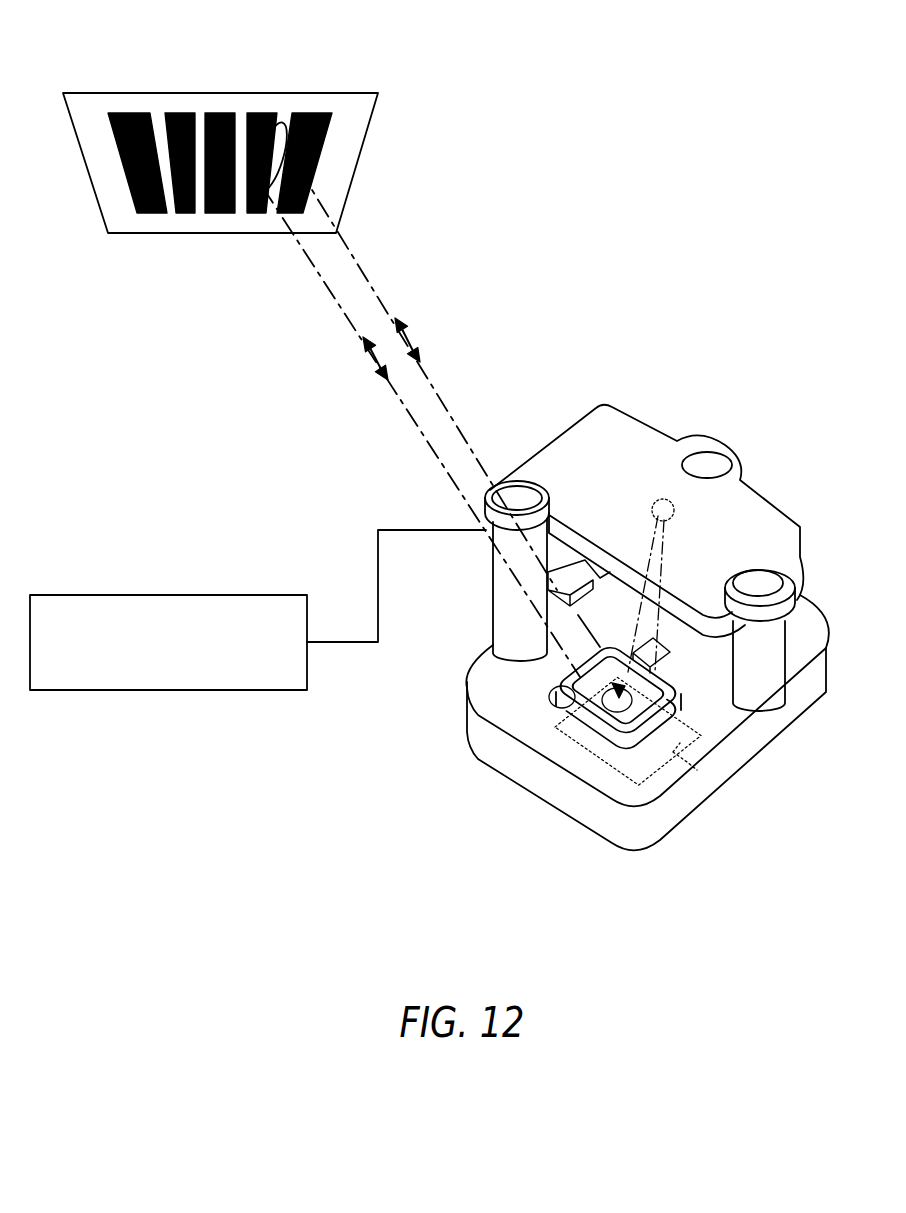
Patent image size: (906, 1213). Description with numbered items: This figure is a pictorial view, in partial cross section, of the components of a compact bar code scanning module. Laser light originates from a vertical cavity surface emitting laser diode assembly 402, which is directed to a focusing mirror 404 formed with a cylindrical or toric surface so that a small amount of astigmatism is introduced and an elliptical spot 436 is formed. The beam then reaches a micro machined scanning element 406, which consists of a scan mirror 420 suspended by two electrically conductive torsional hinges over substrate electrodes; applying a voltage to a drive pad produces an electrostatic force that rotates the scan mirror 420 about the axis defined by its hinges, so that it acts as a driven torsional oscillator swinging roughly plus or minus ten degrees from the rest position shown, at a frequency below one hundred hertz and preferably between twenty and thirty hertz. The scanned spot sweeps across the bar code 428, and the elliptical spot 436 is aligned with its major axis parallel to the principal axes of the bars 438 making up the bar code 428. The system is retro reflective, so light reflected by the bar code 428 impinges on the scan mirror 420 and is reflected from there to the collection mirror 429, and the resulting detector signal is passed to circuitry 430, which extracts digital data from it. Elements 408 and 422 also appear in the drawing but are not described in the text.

The vertical cavity surface emitting laser diode assembly 402 is at (665, 655).
The focusing mirror 404 is at (674, 506).
The micro machined scanning element 406 is at (668, 715).
The axis of rotation 408 is at (662, 551).
The scan mirror 420 is at (620, 728).
The coil 422 is at (697, 770).
The bar code 428 is at (128, 236).
The collection mirror 429 is at (630, 430).
The circuitry 430 is at (258, 594).
The elliptical spot 436 is at (283, 153).
The bars 438 is at (253, 117).